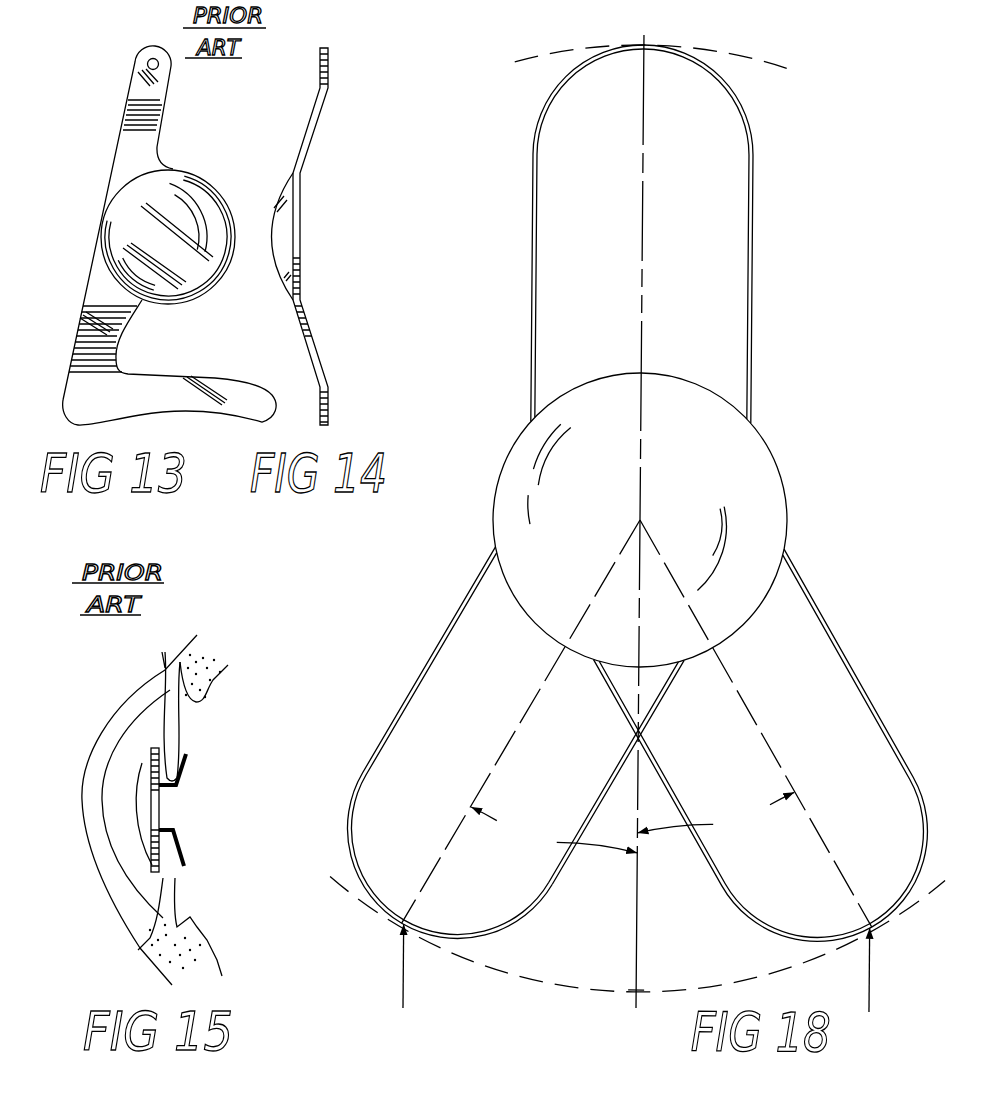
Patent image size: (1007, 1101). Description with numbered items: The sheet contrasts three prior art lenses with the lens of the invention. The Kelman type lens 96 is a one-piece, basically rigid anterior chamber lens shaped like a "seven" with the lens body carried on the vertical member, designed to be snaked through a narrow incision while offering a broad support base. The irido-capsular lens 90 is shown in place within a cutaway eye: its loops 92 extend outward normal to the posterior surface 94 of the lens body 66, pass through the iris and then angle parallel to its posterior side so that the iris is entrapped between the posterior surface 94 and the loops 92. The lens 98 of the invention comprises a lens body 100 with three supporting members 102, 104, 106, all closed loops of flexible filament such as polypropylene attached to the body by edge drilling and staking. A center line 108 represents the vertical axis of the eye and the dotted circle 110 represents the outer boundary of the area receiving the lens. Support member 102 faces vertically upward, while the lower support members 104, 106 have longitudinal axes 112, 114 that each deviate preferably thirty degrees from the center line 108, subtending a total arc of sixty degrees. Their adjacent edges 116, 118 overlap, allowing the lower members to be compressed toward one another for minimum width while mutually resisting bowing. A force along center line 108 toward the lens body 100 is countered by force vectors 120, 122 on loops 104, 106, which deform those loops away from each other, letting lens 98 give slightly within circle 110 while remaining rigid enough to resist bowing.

In FIG. 15, the lens body 66 is at (142, 826).
In FIG. 15, the irido-capsular lens 90 is at (187, 798).
In FIG. 15, the loops 92 is at (186, 760).
In FIG. 15, the posterior surface 94 is at (160, 813).
In FIG. 13, the Kelman type lens 96 is at (112, 133).
In FIG. 14, the Kelman type lens 96 is at (323, 150).
In FIG. 18, the lens 98 is at (777, 388).
In FIG. 18, the lens body 100 is at (789, 488).
In FIG. 18, the support member 102 is at (757, 186).
In FIG. 18, the lower support member 104 is at (522, 927).
In FIG. 18, the lower support member 106 is at (858, 672).
In FIG. 18, the center line 108 is at (646, 280).
In FIG. 18, the circle 110 is at (533, 62).
In FIG. 18, the longitudinal axis 112 is at (487, 787).
In FIG. 18, the longitudinal axis 114 is at (778, 745).
In FIG. 18, the adjacent edge 116 is at (592, 823).
In FIG. 18, the adjacent edge 118 is at (660, 772).
In FIG. 18, the force vector 120 is at (409, 987).
In FIG. 18, the force vector 122 is at (875, 987).